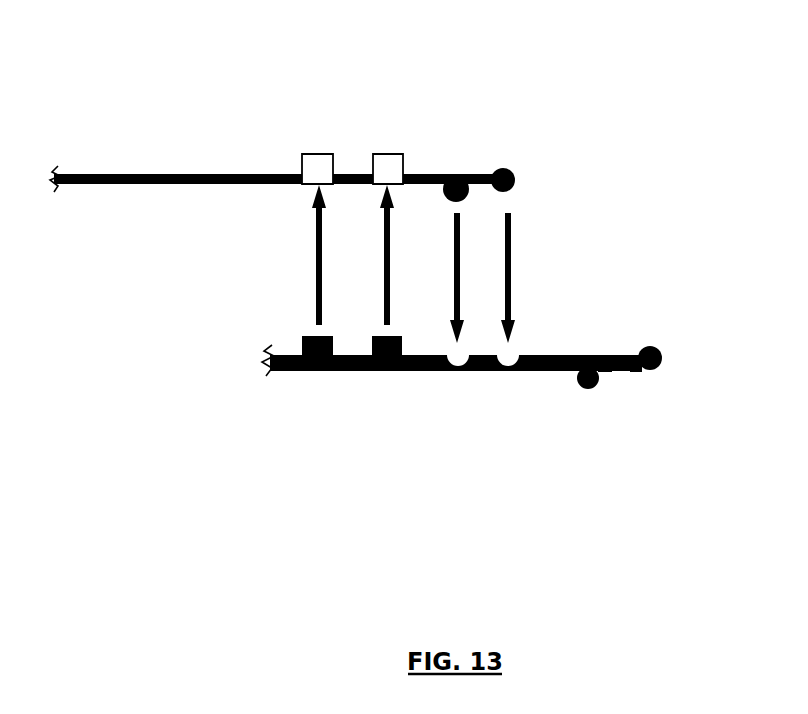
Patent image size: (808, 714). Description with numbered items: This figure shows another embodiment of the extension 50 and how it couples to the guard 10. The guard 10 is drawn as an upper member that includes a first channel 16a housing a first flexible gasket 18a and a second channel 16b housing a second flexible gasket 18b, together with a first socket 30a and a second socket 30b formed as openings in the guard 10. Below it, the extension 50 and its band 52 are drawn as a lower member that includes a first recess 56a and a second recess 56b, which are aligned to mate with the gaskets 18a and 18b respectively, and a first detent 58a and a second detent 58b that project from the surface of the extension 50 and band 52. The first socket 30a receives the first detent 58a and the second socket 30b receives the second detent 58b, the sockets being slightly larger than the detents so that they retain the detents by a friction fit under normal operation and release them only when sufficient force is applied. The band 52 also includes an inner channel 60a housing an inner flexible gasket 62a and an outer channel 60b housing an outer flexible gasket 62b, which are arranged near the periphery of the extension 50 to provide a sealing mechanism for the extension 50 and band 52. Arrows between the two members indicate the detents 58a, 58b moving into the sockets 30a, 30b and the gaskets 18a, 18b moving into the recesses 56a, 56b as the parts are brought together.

The guard 10 is at (130, 154).
The first socket 30a is at (306, 149).
The second socket 30b is at (384, 148).
The first channel 16a is at (441, 172).
The second channel 16b is at (493, 165).
The first flexible gasket 18a is at (463, 194).
The second flexible gasket 18b is at (512, 183).
The extension 50 is at (440, 398).
The band 52 is at (281, 371).
The first recess 56a is at (458, 372).
The second recess 56b is at (507, 372).
The first detent 58a is at (333, 346).
The second detent 58b is at (400, 347).
The inner channel 60a is at (608, 386).
The outer channel 60b is at (641, 383).
The inner flexible gasket 62a is at (582, 388).
The outer flexible gasket 62b is at (660, 367).